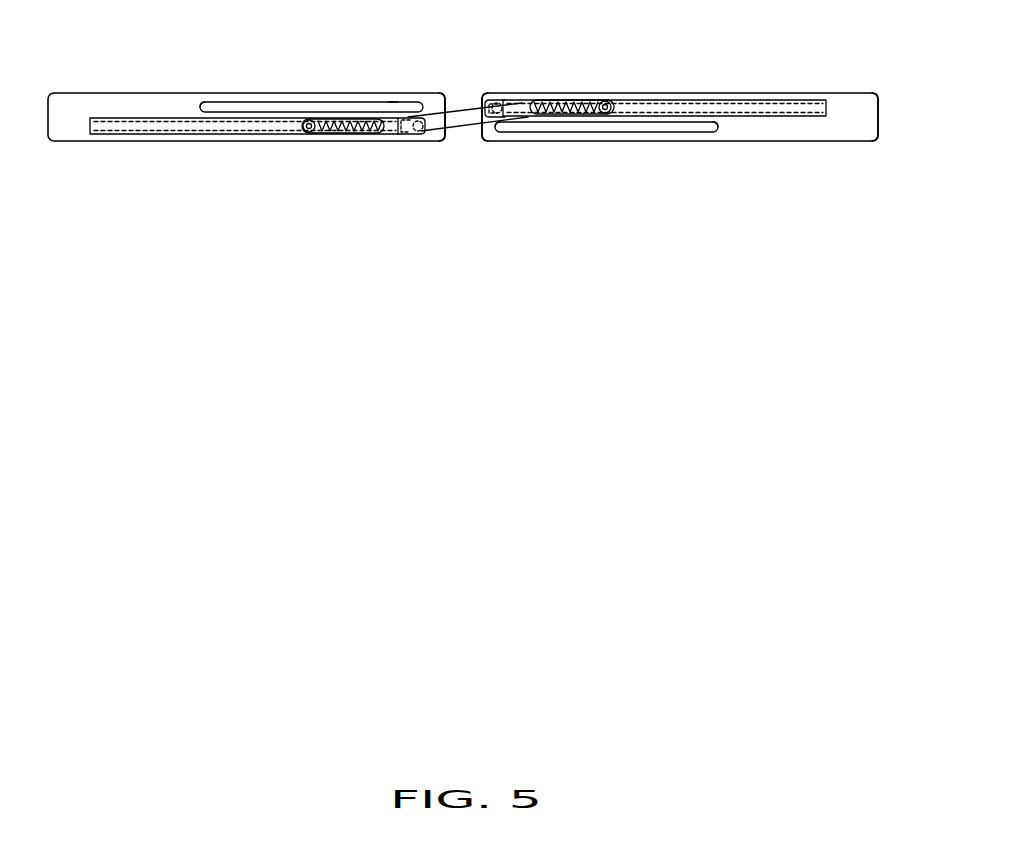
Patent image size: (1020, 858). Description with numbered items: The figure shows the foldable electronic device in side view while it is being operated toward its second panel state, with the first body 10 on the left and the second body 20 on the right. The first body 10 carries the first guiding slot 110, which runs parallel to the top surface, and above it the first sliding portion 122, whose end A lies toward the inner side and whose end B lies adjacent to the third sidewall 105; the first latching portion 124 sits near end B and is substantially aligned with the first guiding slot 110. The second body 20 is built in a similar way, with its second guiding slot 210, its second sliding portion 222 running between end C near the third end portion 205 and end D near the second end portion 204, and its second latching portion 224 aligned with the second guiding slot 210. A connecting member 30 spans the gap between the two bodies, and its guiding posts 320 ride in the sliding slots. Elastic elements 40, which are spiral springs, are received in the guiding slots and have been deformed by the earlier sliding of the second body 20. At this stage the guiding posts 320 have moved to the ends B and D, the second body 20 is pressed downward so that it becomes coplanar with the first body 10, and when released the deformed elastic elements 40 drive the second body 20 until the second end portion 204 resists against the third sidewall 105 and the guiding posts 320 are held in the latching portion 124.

The first body 10 is at (77, 108).
The second body 20 is at (846, 110).
The connecting member 30 is at (523, 122).
The elastic element 40 is at (330, 133).
The third sidewall 105 is at (448, 99).
The first guiding slot 110 is at (134, 135).
The first sliding portion 122 is at (272, 103).
The first latching portion 124 is at (397, 136).
The second end portion 204 is at (479, 139).
The third end portion 205 is at (880, 118).
The second guiding slot 210 is at (754, 108).
The second sliding portion 222 is at (683, 128).
The second latching portion 224 is at (498, 100).
The guiding post 320 is at (480, 100).
The end A is at (197, 101).
The end B is at (393, 100).
The end C is at (719, 129).
The end D is at (494, 136).